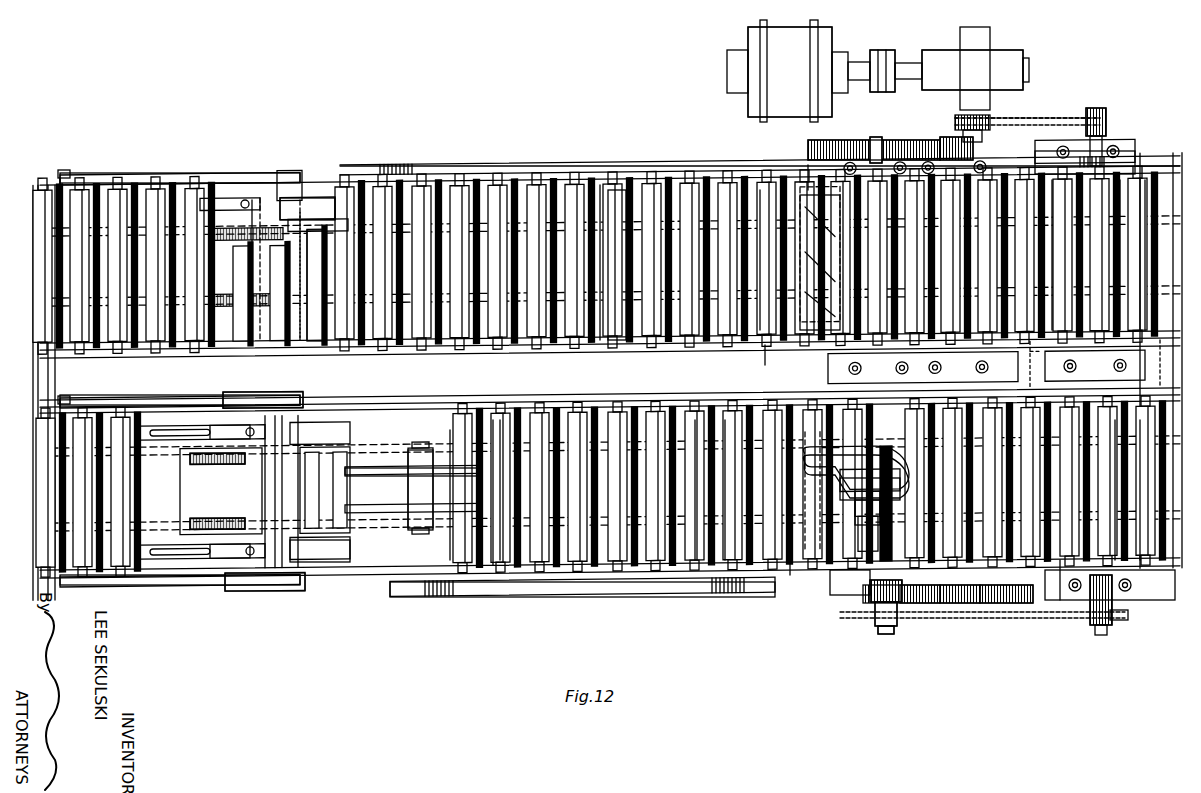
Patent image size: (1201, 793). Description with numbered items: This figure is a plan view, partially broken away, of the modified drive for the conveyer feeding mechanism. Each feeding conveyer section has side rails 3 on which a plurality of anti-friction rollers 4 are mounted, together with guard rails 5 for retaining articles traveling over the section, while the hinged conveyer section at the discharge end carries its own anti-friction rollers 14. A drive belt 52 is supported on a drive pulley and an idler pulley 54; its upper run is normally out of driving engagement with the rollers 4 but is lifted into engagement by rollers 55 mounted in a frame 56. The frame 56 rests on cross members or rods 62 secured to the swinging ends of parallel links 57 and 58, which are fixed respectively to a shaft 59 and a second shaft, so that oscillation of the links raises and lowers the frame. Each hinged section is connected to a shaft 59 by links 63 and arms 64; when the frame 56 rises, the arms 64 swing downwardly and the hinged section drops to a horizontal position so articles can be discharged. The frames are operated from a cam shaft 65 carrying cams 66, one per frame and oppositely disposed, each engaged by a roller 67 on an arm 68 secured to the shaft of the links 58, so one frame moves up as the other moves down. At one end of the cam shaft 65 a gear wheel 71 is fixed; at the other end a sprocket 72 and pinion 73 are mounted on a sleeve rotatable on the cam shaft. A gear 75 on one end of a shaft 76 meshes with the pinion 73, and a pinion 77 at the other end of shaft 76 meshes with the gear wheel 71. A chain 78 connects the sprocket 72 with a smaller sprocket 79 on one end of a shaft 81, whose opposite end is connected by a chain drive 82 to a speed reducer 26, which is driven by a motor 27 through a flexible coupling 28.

The side rails 3 is at (600, 184).
The anti-friction rollers 4 is at (1146, 177).
The guard rails 5 is at (510, 165).
The anti-friction rollers 14 is at (232, 374).
The speed reducer 26 is at (1005, 56).
The motor 27 is at (746, 88).
The flexible coupling 28 is at (886, 50).
The drive belt 52 is at (1052, 250).
The idler pulley 54 is at (225, 535).
The rollers 55 is at (616, 186).
The frame 56 is at (668, 194).
The parallel links 57 is at (306, 198).
The parallel links 58 is at (800, 190).
The shaft 59 is at (298, 180).
The cross members or rods 62 is at (355, 205).
The links 63 is at (62, 177).
The arms 64 is at (142, 174).
The cam shaft 65 is at (876, 140).
The cams 66 is at (806, 165).
The roller 67 is at (760, 190).
The arm 68 is at (766, 346).
The gear wheel 71 is at (902, 137).
The sprocket 72 is at (878, 626).
The pinion 73 is at (870, 620).
The gear 75 is at (1005, 604).
The shaft 76 is at (955, 138).
The pinion 77 is at (982, 147).
The chain 78 is at (932, 620).
The sprocket 79 is at (1122, 620).
The shaft 81 is at (1098, 110).
The chain drive 82 is at (1048, 118).